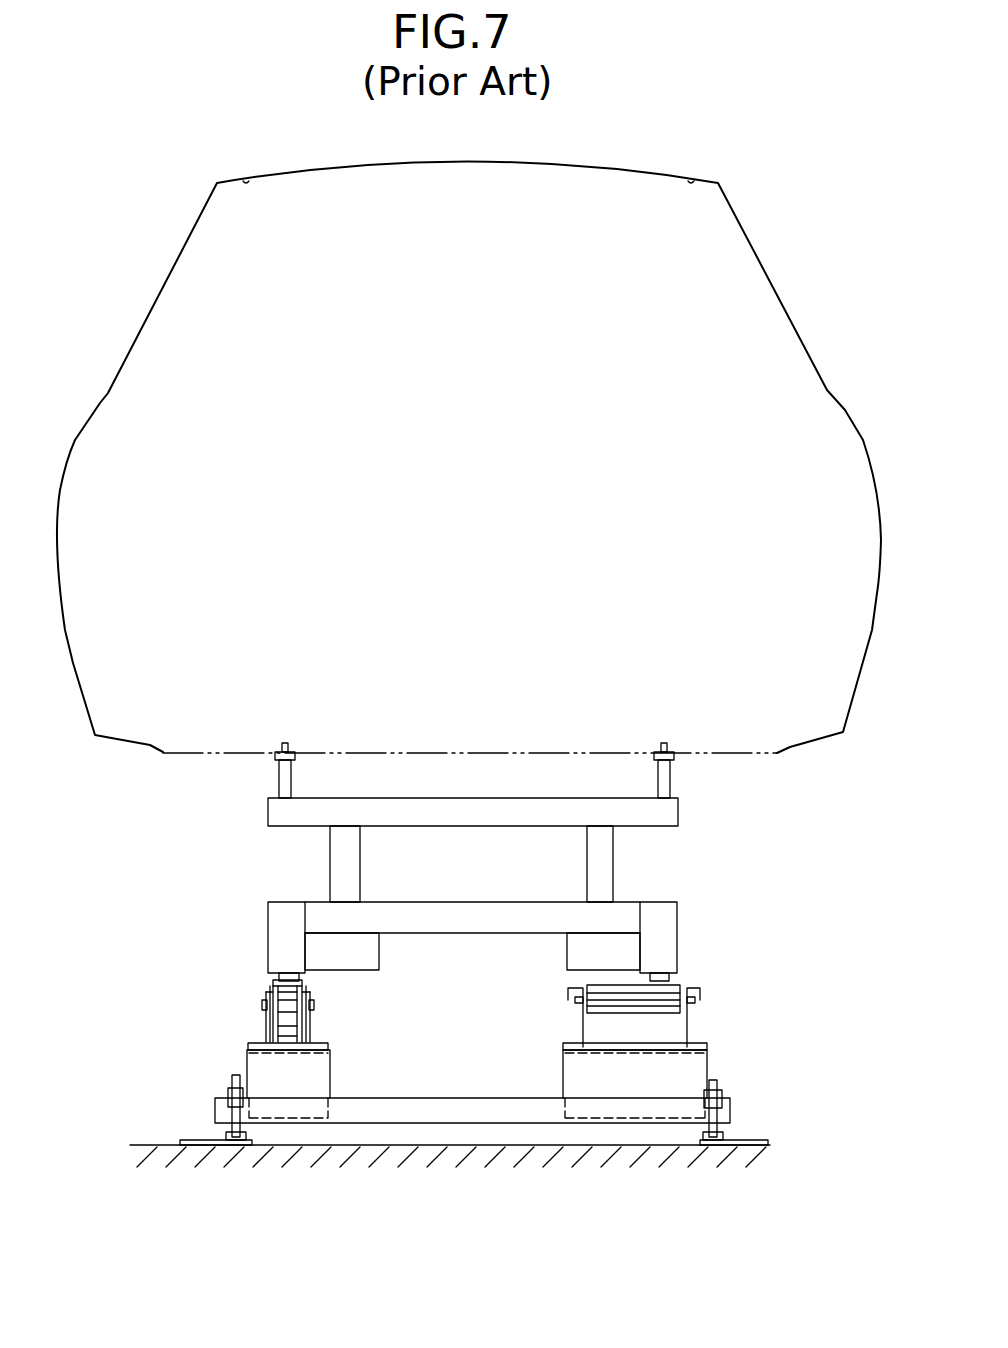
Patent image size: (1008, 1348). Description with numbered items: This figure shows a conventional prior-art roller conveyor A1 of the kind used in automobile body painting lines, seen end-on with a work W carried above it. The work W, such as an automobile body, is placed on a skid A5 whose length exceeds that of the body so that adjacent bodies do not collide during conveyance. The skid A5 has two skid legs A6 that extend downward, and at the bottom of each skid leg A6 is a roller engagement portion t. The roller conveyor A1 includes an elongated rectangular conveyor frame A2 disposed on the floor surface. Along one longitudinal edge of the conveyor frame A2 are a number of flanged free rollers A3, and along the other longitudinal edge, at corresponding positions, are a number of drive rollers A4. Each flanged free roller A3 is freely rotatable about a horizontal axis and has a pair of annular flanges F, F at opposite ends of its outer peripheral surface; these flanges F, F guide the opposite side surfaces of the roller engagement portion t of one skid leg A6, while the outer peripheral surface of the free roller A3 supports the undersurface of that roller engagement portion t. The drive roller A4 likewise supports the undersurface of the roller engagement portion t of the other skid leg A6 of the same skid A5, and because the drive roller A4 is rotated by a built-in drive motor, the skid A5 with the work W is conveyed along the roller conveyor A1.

The work W is at (612, 166).
The roller conveyor A1 is at (723, 1064).
The conveyor frame A2 is at (406, 1098).
The flanged free roller A3 is at (287, 1007).
The drive roller A4 is at (657, 1006).
The skid A5 is at (680, 896).
The skid leg A6 is at (290, 927).
The annular flange F is at (268, 988).
The roller engagement portion t is at (290, 975).